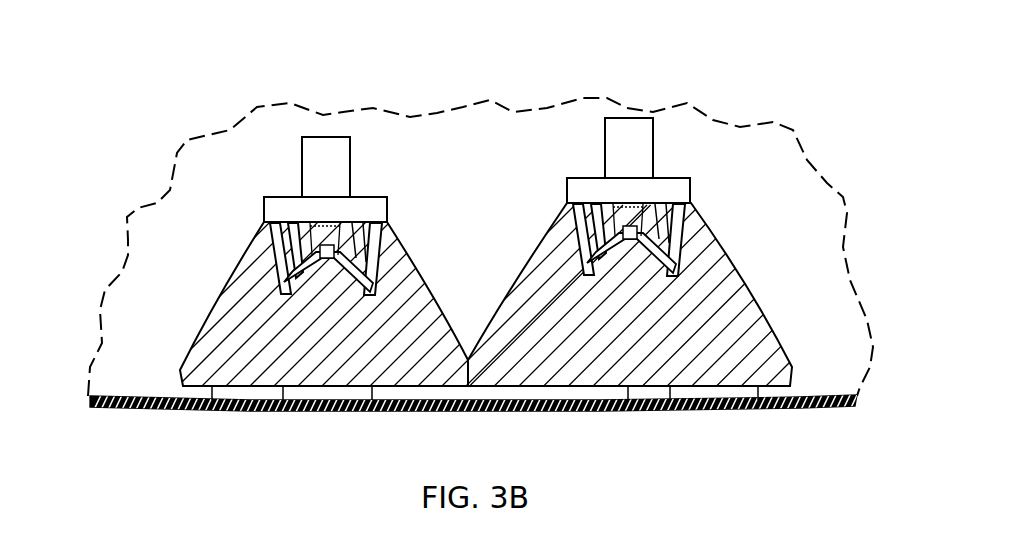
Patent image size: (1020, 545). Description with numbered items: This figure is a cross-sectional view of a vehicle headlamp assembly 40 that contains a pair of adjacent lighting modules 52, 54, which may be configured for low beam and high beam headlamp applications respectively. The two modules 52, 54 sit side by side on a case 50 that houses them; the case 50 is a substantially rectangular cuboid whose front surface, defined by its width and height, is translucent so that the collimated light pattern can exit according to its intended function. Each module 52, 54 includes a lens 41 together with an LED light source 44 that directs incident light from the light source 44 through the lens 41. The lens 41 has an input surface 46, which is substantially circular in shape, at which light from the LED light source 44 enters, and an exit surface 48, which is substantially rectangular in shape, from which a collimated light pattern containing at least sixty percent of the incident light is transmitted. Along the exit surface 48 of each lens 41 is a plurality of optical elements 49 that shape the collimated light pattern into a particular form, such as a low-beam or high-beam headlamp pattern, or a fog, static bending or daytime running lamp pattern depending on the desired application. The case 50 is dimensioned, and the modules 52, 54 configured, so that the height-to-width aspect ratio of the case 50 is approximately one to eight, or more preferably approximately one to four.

The vehicle headlamp assembly 40 is at (773, 87).
The lens 41 is at (501, 296).
The LED light source 44 is at (317, 230).
The input surface 46 is at (163, 253).
The exit surface 48 is at (212, 402).
The optical elements 49 is at (283, 402).
The case 50 is at (130, 408).
The lighting module 52 is at (417, 243).
The lighting module 54 is at (733, 238).